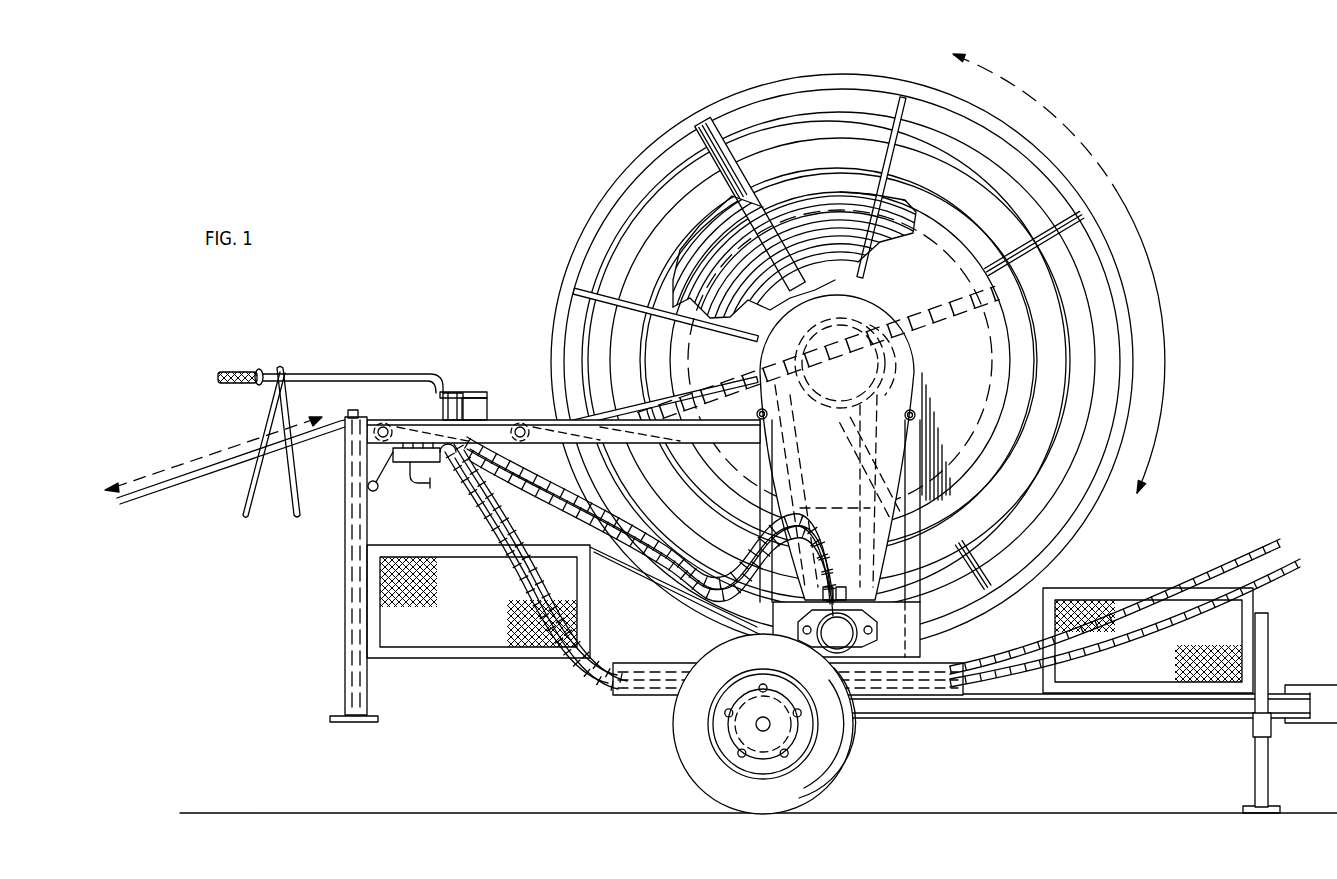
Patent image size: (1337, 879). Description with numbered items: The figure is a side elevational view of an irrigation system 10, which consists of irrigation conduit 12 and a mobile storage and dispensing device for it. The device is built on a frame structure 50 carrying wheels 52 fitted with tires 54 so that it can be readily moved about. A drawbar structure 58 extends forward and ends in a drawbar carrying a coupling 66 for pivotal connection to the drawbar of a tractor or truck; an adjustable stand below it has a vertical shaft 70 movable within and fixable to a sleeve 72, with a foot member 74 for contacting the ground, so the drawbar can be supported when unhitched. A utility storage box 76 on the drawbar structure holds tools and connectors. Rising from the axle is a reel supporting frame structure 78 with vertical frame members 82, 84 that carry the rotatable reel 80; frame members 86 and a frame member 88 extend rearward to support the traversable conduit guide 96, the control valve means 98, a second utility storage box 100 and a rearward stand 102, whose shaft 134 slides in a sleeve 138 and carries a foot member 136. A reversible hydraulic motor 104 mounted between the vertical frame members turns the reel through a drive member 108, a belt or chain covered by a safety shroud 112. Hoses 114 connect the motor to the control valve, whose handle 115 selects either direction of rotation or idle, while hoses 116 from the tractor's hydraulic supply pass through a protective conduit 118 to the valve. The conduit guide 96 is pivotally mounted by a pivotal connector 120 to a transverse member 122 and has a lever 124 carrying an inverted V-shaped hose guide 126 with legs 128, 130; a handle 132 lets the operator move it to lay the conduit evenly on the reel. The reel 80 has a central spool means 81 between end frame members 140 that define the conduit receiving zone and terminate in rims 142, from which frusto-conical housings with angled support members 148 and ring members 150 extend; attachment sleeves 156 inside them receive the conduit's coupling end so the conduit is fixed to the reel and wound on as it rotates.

The irrigation system 10 is at (484, 226).
The irrigation conduit 12 is at (150, 506).
The frame structure 50 is at (998, 742).
The wheels 52 is at (727, 746).
The tires 54 is at (827, 768).
The drawbar structure 58 is at (1118, 720).
The coupling 66 is at (1305, 698).
The vertical shaft 70 is at (1255, 786).
The sleeve 72 is at (1271, 735).
The foot member 74 is at (1112, 520).
The utility storage box 76 is at (1125, 599).
The reel supporting frame structure 78 is at (732, 607).
The reel 80 is at (688, 110).
The central spool means 81 is at (837, 429).
The vertical frame member 82 is at (764, 508).
The vertical frame member 84 is at (983, 596).
The frame members 86 is at (527, 544).
The frame member 88 is at (567, 427).
The traversable conduit guide 96 is at (331, 368).
The control valve means 98 is at (385, 491).
The utility storage box 100 is at (385, 615).
The rearward stand 102 is at (343, 607).
The hydraulic motor 104 is at (893, 700).
The drive member 108 is at (819, 401).
The safety shroud 112 is at (915, 625).
The hoses 114 is at (610, 548).
The handle 115 is at (391, 455).
The hoses 116 is at (1258, 554).
The conduit 118 is at (636, 689).
The pivotal connector 120 is at (467, 388).
The transverse member 122 is at (484, 408).
The lever 124 is at (387, 372).
The inverted V-shaped hose guide 126 is at (276, 402).
The leg 128 is at (240, 518).
The leg 130 is at (295, 516).
The handle 132 is at (252, 368).
The shaft 134 is at (345, 690).
The foot member 136 is at (360, 728).
The sleeve 138 is at (392, 535).
The end frame members 140 is at (742, 118).
The rims 142 is at (598, 213).
The angled support members 148 is at (580, 287).
The ring members 150 is at (1100, 252).
The attachment sleeves 156 is at (792, 212).